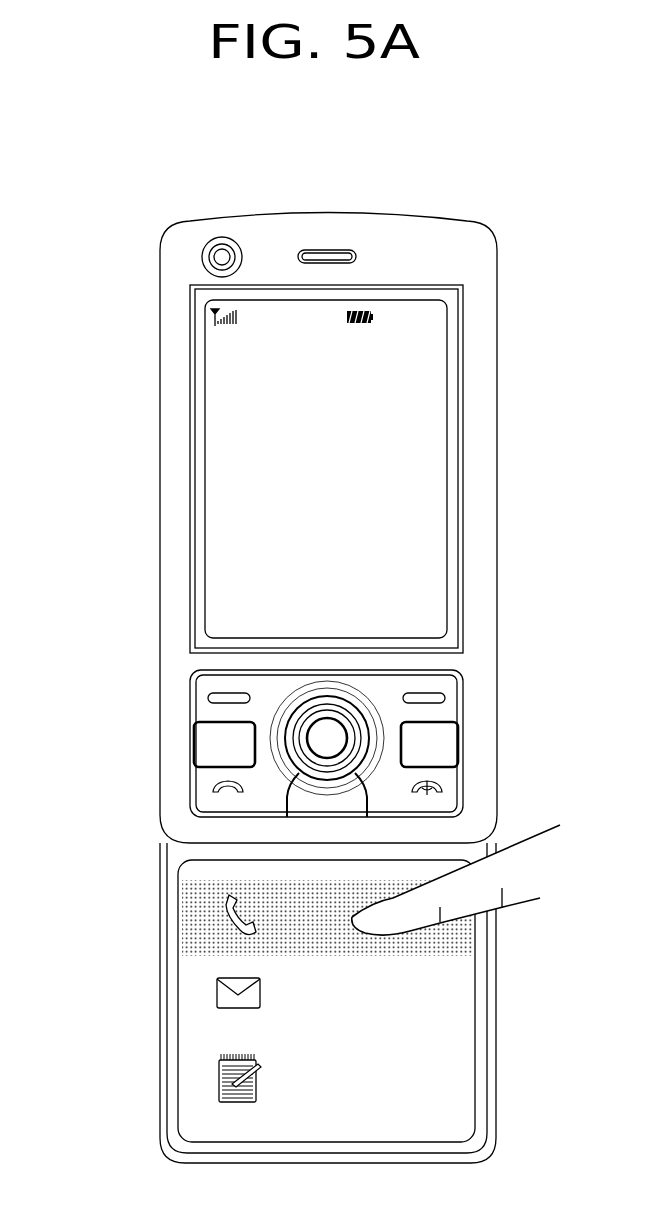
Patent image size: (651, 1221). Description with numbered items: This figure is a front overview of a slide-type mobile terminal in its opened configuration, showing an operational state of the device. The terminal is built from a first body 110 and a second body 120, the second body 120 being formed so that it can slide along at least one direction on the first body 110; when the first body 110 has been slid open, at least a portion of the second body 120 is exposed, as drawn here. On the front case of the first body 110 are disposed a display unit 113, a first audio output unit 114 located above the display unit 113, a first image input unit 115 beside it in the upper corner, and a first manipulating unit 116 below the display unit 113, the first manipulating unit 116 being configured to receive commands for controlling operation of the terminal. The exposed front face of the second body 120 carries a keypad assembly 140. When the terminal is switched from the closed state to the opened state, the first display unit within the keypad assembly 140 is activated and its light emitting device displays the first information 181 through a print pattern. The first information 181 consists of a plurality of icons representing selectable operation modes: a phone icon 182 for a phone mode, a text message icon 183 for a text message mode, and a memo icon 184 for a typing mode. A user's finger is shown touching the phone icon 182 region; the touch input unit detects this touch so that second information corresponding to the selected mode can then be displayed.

The first body 110 is at (152, 323).
The display unit 113 is at (240, 438).
The first audio output unit 114 is at (327, 250).
The first image input unit 115 is at (222, 237).
The first manipulating unit 116 is at (203, 698).
The second body 120 is at (152, 875).
The keypad assembly 140 is at (477, 1059).
The first information 181 is at (79, 902).
The phone icon 182 is at (203, 915).
The text message icon 183 is at (203, 993).
The memo icon 184 is at (203, 1078).